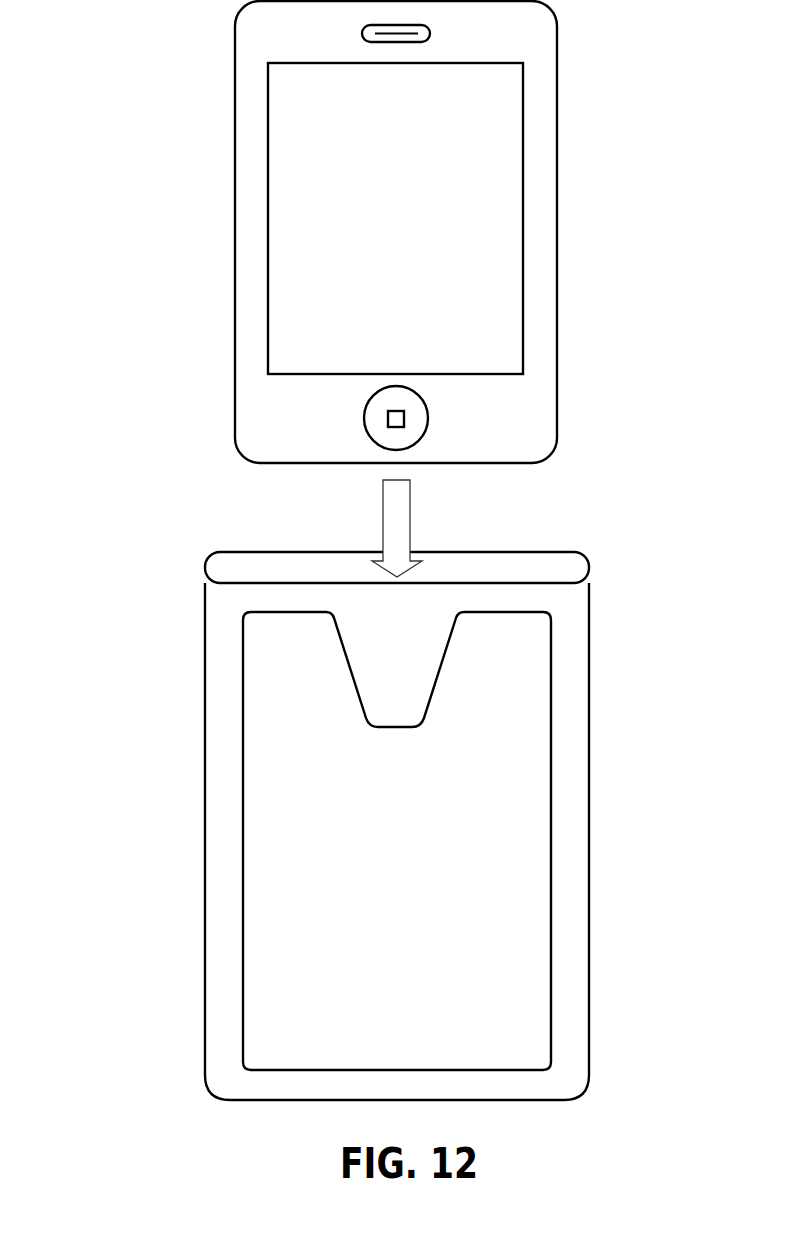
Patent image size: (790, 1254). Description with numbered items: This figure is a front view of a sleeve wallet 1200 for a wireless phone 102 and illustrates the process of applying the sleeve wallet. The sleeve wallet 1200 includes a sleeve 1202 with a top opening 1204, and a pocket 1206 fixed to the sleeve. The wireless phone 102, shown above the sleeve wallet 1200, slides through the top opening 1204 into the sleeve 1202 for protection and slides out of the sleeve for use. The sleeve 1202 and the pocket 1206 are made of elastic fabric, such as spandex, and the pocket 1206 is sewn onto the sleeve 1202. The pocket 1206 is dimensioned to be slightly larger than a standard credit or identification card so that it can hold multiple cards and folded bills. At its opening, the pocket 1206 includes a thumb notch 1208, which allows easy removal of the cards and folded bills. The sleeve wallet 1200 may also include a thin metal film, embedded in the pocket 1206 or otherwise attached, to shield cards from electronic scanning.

The wireless phone 102 is at (556, 199).
The sleeve wallet 1200 is at (360, 805).
The sleeve 1202 is at (589, 712).
The top opening 1204 is at (525, 568).
The pocket 1206 is at (540, 920).
The thumb notch 1208 is at (343, 655).